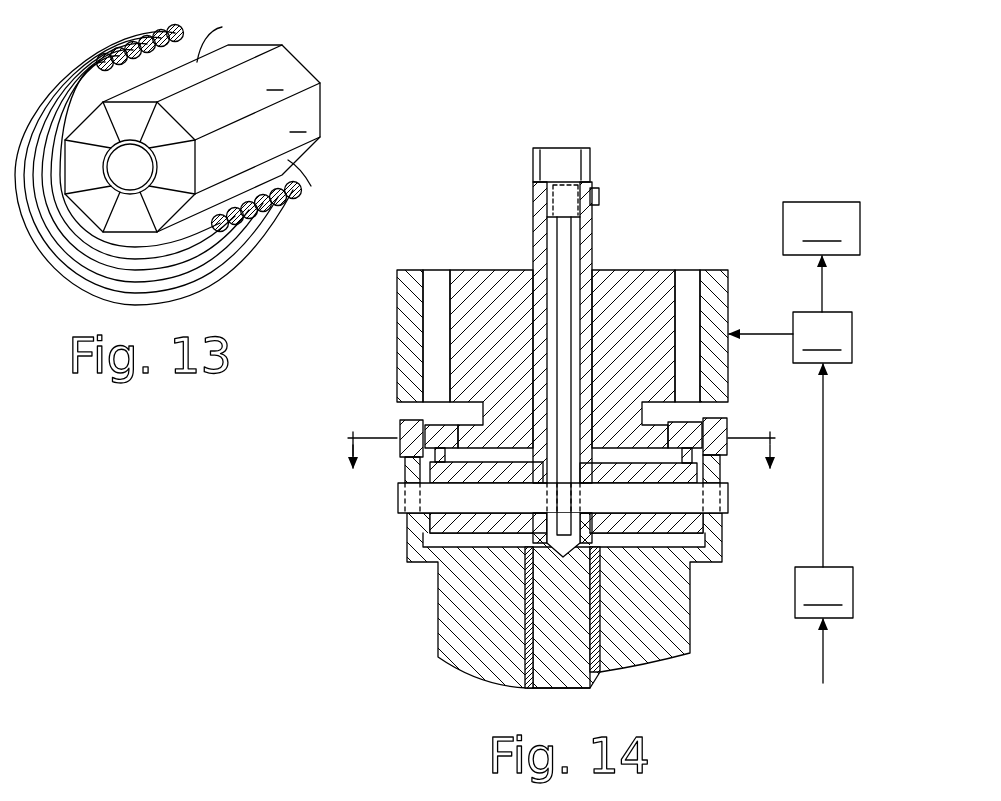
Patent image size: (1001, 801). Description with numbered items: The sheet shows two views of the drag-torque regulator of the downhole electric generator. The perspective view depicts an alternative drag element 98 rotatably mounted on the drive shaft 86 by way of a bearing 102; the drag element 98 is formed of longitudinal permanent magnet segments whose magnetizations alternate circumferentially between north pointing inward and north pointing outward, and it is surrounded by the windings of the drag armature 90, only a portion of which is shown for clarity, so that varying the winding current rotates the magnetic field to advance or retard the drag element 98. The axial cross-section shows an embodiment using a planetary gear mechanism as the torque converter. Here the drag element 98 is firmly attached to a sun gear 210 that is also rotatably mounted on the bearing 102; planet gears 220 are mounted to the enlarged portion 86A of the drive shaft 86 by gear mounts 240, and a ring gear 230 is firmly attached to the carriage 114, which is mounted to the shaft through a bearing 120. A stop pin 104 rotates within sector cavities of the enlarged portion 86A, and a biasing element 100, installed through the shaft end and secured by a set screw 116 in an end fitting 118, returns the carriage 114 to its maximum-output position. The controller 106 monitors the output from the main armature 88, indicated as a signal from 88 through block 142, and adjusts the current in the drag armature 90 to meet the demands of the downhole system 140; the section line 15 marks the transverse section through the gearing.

In FIG. 13, the drive shaft 86 is at (143, 165).
In FIG. 14, the drive shaft 86 is at (560, 673).
In FIG. 14, the enlarged portion of drive shaft 86A is at (720, 462).
In FIG. 14, the main armature 88 is at (823, 684).
In FIG. 13, the drag armature 90 is at (53, 240).
In FIG. 14, the drag armature 90 is at (397, 320).
In FIG. 13, the drag element 98 is at (307, 60).
In FIG. 14, the drag element 98 is at (650, 272).
In FIG. 14, the biasing element 100 is at (571, 258).
In FIG. 13, the bearing 102 is at (147, 150).
In FIG. 14, the bearing 102 is at (527, 290).
In FIG. 14, the stop pin 104 is at (398, 503).
In FIG. 14, the controller 106 is at (790, 309).
In FIG. 14, the carriage 114 is at (438, 605).
In FIG. 14, the set screw 116 is at (599, 196).
In FIG. 14, the end fitting 118 is at (533, 176).
In FIG. 14, the bearing 120 is at (598, 670).
In FIG. 14, the downhole system 140 is at (821, 228).
In FIG. 14, the control circuit 142 is at (824, 491).
In FIG. 14, the section line 15 is at (558, 465).
In FIG. 14, the sun gear 210 is at (655, 427).
In FIG. 14, the planet gears 220 is at (430, 420).
In FIG. 14, the ring gear 230 is at (400, 432).
In FIG. 14, the gear mounts 240 is at (675, 452).